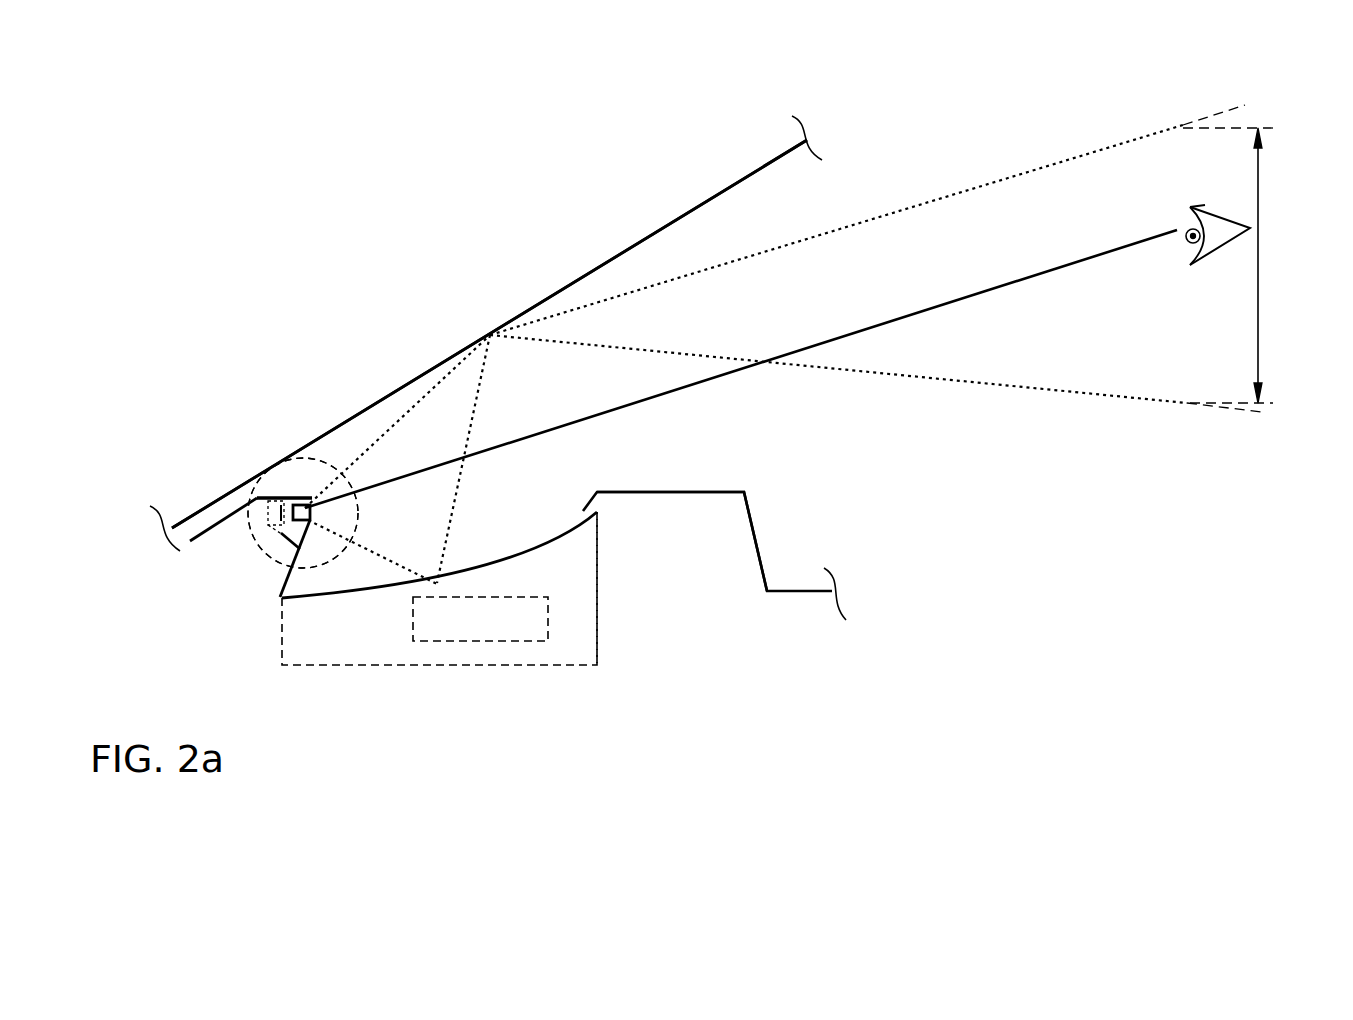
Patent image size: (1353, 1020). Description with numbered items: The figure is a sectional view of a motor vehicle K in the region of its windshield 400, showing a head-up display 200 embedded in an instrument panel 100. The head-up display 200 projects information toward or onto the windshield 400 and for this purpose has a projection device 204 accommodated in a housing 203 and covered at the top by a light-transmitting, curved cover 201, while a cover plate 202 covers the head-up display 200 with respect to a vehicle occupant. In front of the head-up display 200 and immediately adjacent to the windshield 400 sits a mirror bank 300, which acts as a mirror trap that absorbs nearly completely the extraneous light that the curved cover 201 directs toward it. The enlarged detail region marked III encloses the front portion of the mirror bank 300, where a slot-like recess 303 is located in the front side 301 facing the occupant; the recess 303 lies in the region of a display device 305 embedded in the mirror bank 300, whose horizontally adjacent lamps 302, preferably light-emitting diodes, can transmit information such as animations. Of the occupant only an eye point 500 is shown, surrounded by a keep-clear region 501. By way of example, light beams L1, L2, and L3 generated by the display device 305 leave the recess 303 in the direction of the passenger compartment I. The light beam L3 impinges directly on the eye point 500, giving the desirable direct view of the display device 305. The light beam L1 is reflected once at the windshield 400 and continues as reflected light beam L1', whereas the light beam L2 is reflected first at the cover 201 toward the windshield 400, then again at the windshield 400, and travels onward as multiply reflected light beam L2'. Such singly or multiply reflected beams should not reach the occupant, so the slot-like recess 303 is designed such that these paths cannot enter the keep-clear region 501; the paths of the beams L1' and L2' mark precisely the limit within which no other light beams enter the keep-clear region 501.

The instrument panel 100 is at (801, 591).
The head-up display 200 is at (530, 518).
The cover 201 is at (333, 595).
The cover plate 202 is at (756, 473).
The housing 203 is at (597, 578).
The projection device 204 is at (548, 625).
The mirror bank 300 is at (183, 509).
The front side 301 is at (310, 498).
The lamps 302 is at (278, 510).
The slot-like recess 303 is at (300, 512).
The display device 305 is at (283, 535).
The windshield 400 is at (558, 291).
The eye point 500 is at (1190, 233).
The keep-clear region 501 is at (1258, 275).
The passenger compartment I is at (682, 245).
The detail III is at (252, 535).
The motor vehicle K is at (406, 266).
The light beam L1 is at (397, 416).
The reflected light beam L1' is at (881, 217).
The light beam L2 is at (399, 524).
The multiply reflected light beam L2' is at (881, 373).
The light beam L3 is at (443, 467).